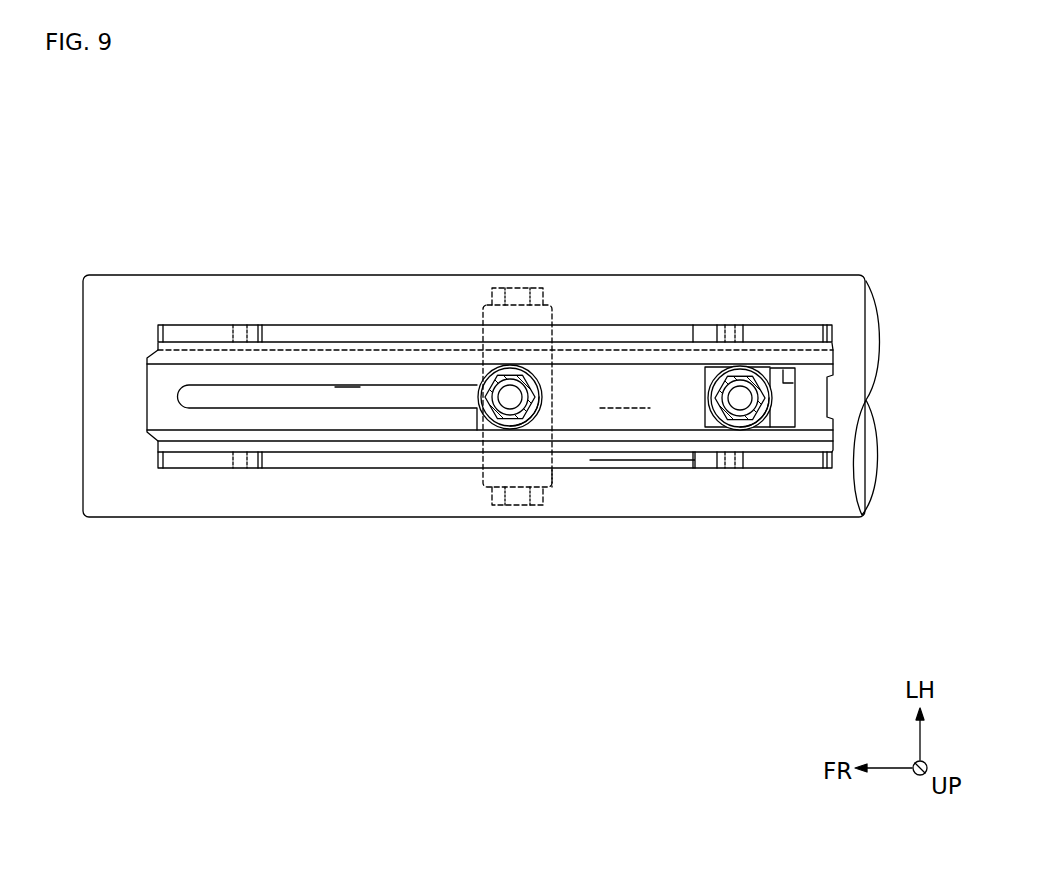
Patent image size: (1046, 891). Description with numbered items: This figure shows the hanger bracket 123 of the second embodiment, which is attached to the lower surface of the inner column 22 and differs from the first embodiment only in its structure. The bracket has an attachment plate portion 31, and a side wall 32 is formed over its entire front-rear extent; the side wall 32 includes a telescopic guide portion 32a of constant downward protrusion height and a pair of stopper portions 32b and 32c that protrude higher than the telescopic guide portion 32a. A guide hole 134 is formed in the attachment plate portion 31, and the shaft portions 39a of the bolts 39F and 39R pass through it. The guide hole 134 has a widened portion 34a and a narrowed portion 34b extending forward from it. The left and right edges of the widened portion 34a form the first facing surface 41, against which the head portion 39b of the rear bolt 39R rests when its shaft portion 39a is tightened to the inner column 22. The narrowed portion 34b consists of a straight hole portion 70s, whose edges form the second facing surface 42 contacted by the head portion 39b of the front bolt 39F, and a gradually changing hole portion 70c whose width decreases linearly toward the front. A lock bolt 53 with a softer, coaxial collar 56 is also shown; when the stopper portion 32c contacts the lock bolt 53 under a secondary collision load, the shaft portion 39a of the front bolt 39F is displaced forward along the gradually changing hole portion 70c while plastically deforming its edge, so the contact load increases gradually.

The inner column 22 is at (315, 518).
The attachment plate portion 31 is at (819, 445).
The side wall 32 is at (489, 406).
The telescopic guide portion 32a is at (380, 330).
The stopper portion 32b is at (190, 330).
The stopper portion 32c is at (775, 332).
The widened portion 34a is at (797, 383).
The narrowed portion 34b is at (667, 390).
The bolt on the front side 39F is at (486, 380).
The bolt on the rear side 39R is at (766, 380).
The shaft portion 39a is at (506, 363).
The head portion 39b is at (545, 390).
The first facing surface 41 is at (765, 428).
The second facing surface 42 is at (595, 419).
The lock bolt 53 is at (553, 509).
The collar 56 is at (555, 482).
The gradually changing hole portion 70c is at (338, 398).
The straight hole portion 70s is at (617, 392).
The hanger bracket 123 is at (646, 468).
The guide hole 134 is at (317, 391).